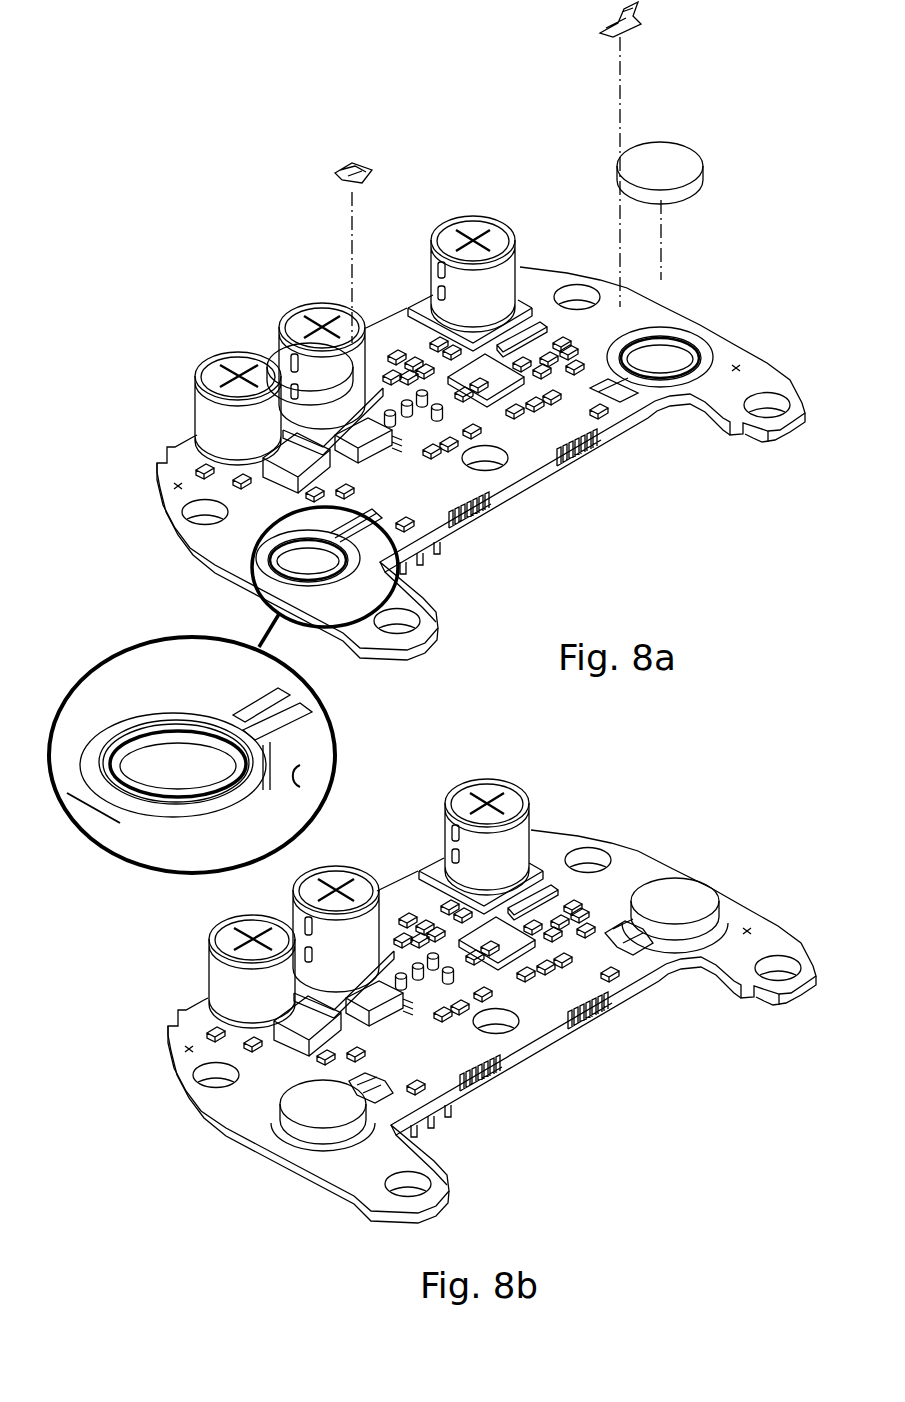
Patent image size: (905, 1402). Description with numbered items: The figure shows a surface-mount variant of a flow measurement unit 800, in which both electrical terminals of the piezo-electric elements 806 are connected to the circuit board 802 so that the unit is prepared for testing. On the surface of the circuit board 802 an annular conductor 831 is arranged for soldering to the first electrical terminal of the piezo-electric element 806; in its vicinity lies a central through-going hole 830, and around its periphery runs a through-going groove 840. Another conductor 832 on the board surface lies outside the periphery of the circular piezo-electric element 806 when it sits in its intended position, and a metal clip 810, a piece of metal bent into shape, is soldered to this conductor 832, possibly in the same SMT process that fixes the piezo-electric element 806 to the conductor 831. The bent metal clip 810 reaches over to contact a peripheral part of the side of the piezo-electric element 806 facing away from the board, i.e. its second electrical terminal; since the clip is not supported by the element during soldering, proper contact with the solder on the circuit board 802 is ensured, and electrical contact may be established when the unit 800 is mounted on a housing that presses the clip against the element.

In FIG. 8B, the flow measurement unit 800 is at (492, 1001).
In FIG. 8A, the circuit board 802 is at (235, 543).
In FIG. 8B, the circuit board 802 is at (492, 1001).
In FIG. 8A, the piezo-electric element 806 is at (315, 355).
In FIG. 8B, the piezo-electric element 806 is at (499, 1016).
In FIG. 8A, the metal clip 810 is at (363, 165).
In FIG. 8B, the metal clip 810 is at (501, 1012).
In FIG. 8A, the central through-going hole 830 is at (665, 352).
In FIG. 8A, the annular conductor 831 is at (188, 716).
In FIG. 8A, the conductor 832 is at (270, 703).
In FIG. 8A, the through-going groove 840 is at (270, 778).